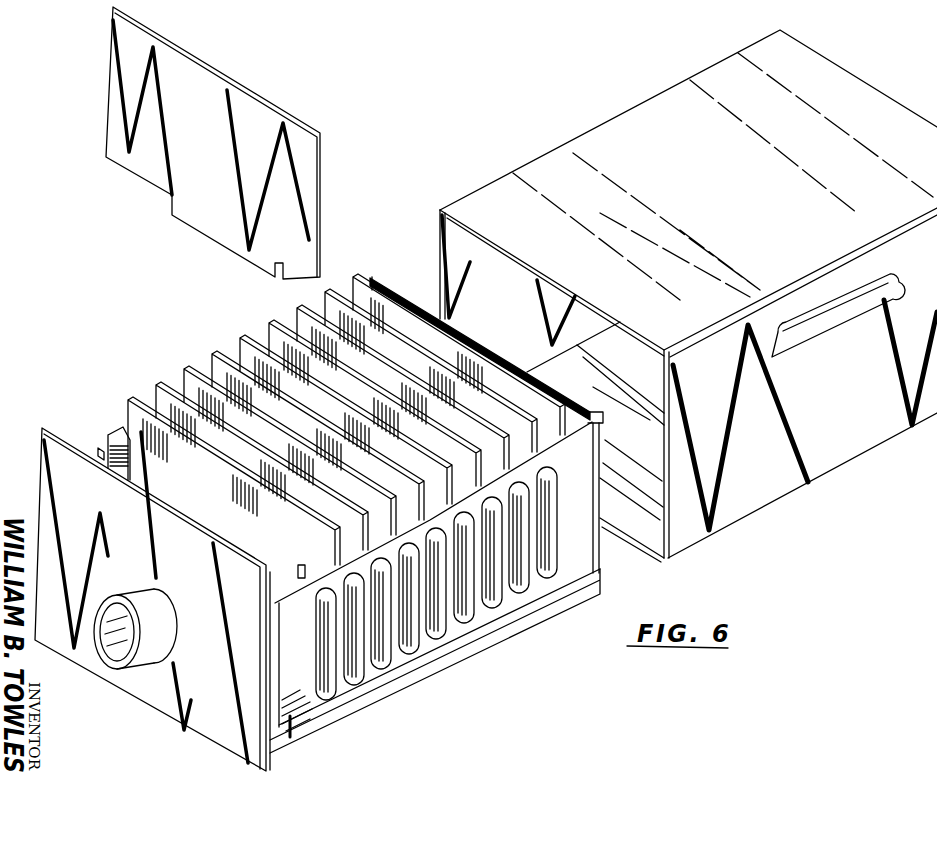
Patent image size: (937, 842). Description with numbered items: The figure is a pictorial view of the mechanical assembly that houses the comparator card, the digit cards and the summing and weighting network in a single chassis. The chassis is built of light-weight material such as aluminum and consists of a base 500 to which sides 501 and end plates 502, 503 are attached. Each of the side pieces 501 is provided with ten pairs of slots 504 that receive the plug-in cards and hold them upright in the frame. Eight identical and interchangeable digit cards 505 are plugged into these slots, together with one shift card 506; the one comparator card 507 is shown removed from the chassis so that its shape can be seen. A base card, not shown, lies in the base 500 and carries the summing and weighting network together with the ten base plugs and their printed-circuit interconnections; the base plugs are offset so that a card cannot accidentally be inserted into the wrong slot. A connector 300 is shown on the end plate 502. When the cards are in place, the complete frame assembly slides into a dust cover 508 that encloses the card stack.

The tubular connector 300 is at (112, 652).
The base 500 is at (490, 647).
The sides 501 is at (127, 428).
The end plate 502 is at (48, 456).
The end plate 503 is at (392, 285).
The slots 504 is at (100, 450).
The digit cards 505 is at (130, 399).
The shift card 506 is at (357, 269).
The comparator card 507 is at (250, 91).
The dust cover 508 is at (742, 207).